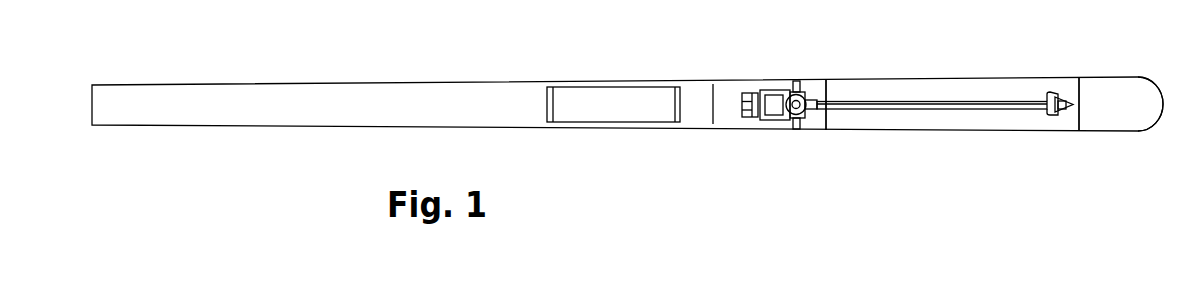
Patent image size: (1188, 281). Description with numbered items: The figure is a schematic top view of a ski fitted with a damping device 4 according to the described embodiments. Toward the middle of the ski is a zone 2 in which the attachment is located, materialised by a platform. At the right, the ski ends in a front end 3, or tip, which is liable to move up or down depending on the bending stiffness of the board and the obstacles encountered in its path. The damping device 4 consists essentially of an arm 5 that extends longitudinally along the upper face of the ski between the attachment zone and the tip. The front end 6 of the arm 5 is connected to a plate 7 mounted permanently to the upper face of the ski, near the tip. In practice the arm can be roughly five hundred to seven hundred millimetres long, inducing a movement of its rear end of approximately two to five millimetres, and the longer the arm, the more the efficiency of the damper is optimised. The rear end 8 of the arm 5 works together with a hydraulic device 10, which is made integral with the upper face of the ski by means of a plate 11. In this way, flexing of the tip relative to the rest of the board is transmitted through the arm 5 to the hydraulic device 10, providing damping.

The zone 2 is at (637, 110).
The front end 3 is at (1112, 115).
The damping device 4 is at (962, 140).
The arm 5 is at (912, 101).
The front end 6 is at (1048, 97).
The plate 7 is at (1067, 96).
The rear end 8 is at (820, 100).
The hydraulic device 10 is at (775, 103).
The plate 11 is at (755, 120).